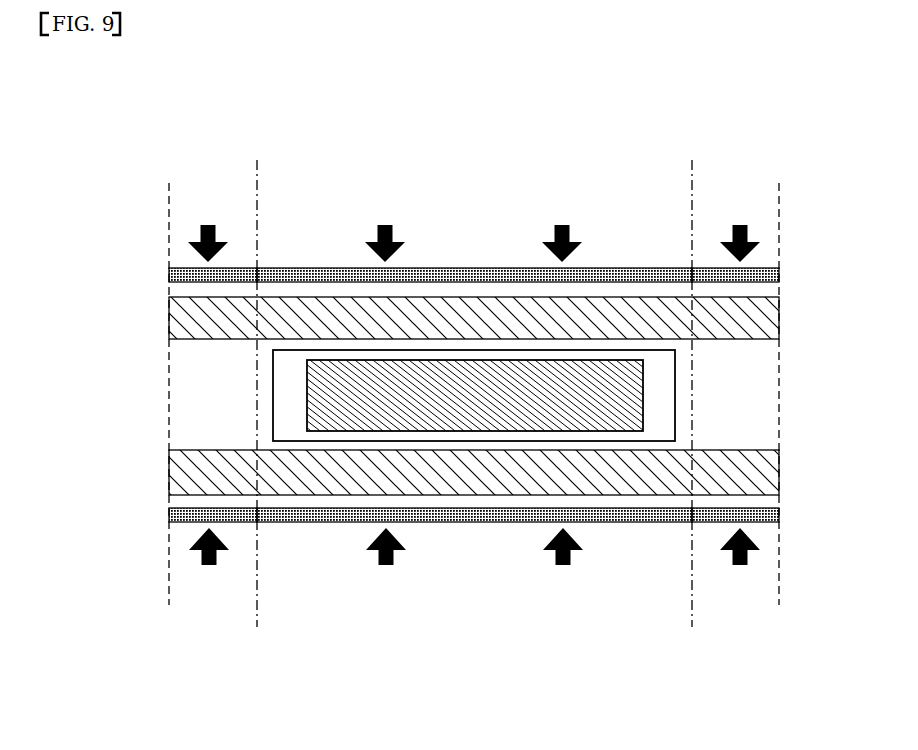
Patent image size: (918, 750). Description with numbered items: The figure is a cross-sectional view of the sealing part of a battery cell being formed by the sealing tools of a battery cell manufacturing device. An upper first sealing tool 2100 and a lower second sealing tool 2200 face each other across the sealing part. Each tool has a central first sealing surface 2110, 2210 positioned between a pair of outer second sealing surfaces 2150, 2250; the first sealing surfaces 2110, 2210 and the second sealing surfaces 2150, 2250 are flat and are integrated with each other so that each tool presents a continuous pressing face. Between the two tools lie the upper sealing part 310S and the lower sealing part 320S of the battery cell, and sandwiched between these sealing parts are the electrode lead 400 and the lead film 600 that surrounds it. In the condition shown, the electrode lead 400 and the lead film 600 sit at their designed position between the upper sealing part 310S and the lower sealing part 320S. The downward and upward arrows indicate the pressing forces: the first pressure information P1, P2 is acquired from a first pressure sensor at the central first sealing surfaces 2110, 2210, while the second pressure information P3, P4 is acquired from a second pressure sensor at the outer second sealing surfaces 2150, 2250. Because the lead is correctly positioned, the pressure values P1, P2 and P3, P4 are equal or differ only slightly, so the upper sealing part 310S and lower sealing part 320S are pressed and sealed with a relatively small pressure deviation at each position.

The first sealing tool 2100 is at (474, 168).
The first sealing surface 2110 is at (493, 267).
The second sealing surfaces 2150 is at (238, 268).
The second sealing tool 2200 is at (474, 619).
The first sealing surface 2210 is at (491, 524).
The second sealing surfaces 2250 is at (238, 522).
The upper sealing part 310S is at (628, 313).
The lower sealing part 320S is at (630, 473).
The lead film 600 is at (290, 373).
The electrode lead 400 is at (432, 383).
The first pressure information P1 is at (385, 394).
The first pressure information P2 is at (562, 394).
The second pressure information P3 is at (208, 394).
The second pressure information P4 is at (740, 394).